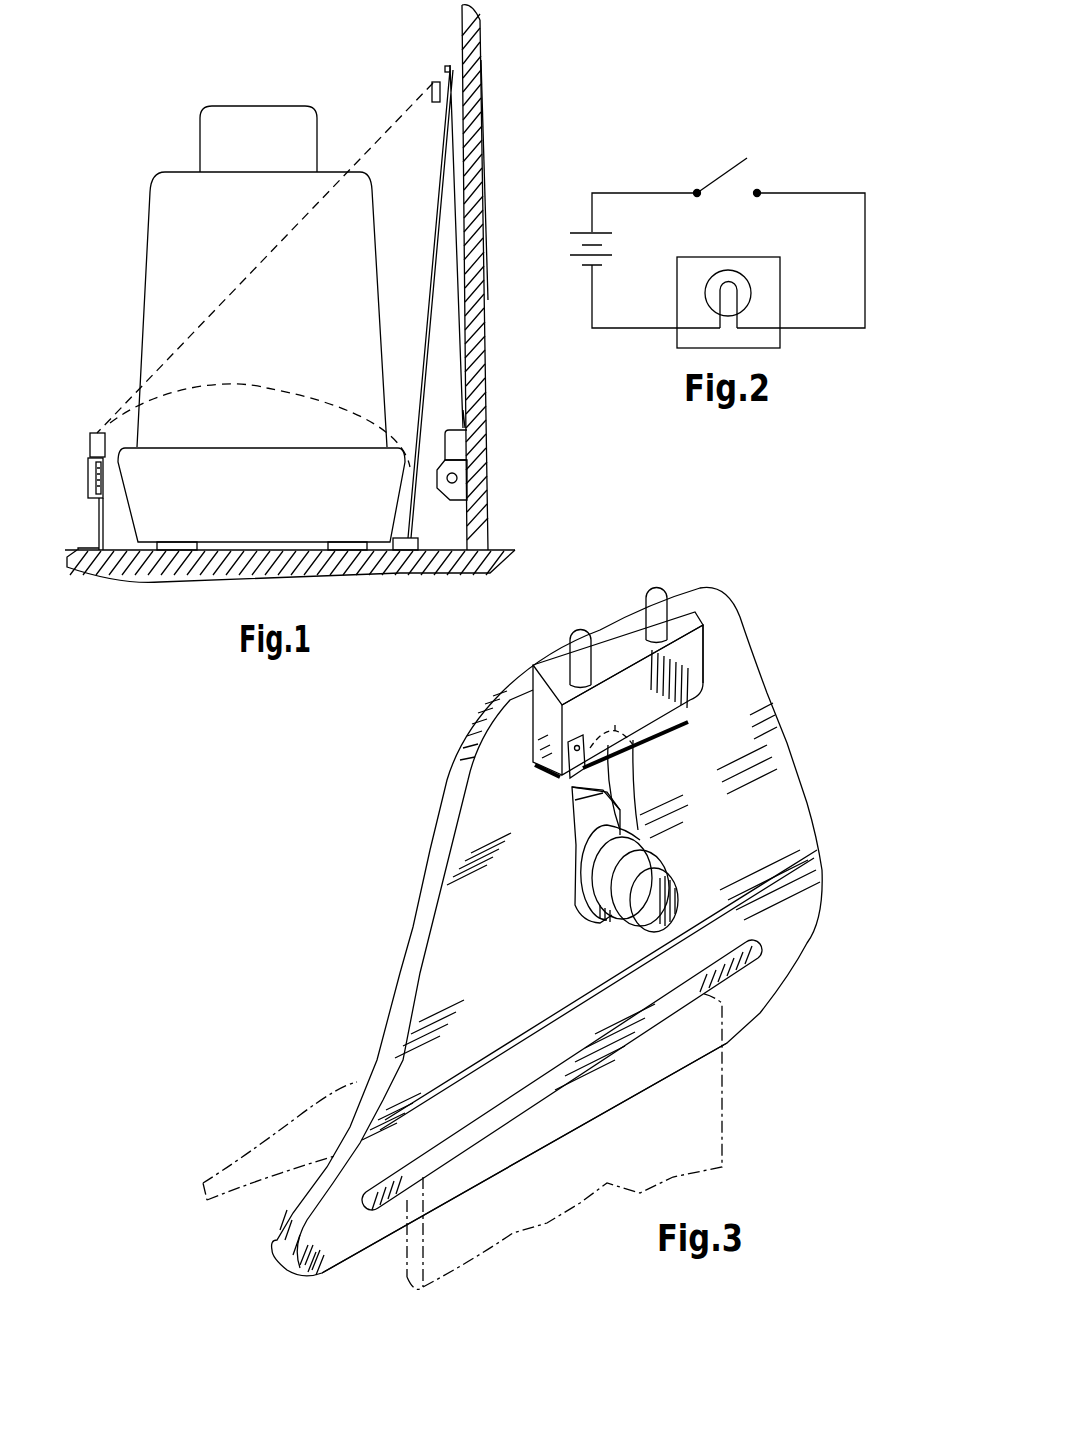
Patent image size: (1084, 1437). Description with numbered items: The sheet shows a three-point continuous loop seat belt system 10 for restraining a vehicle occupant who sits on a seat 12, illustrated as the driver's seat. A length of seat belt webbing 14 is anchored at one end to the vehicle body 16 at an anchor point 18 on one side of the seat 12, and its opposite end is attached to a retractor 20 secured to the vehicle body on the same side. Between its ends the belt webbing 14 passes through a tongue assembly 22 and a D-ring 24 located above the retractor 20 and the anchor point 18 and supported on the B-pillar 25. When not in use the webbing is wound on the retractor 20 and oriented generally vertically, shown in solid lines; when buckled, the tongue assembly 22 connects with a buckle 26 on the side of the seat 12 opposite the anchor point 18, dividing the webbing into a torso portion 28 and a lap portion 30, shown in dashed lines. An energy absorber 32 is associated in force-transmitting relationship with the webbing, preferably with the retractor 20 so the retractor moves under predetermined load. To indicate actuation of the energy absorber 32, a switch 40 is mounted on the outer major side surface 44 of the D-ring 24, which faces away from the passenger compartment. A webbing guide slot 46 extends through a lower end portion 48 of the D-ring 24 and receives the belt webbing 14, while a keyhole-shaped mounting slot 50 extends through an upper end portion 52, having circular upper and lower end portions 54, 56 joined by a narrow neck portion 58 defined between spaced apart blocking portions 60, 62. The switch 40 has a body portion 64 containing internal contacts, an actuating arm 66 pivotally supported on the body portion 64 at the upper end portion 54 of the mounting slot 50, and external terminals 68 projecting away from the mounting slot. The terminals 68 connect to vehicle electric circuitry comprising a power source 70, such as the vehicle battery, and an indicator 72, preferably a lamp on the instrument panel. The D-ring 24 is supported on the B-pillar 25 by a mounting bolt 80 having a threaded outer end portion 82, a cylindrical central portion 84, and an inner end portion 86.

In FIG. 1, the seat belt system 10 is at (152, 127).
In FIG. 3, the seat belt system 10 is at (358, 917).
In FIG. 1, the seat 12 is at (173, 187).
In FIG. 1, the seat belt webbing 14 is at (424, 282).
In FIG. 3, the seat belt webbing 14 is at (257, 1150).
In FIG. 1, the vehicle body 16 is at (505, 567).
In FIG. 1, the anchor point 18 is at (405, 537).
In FIG. 1, the retractor 20 is at (472, 481).
In FIG. 1, the tongue assembly 22 is at (432, 82).
In FIG. 1, the D-ring 24 is at (457, 43).
In FIG. 3, the D-ring 24 is at (388, 978).
In FIG. 1, the B-pillar 25 is at (475, 250).
In FIG. 1, the buckle 26 is at (90, 498).
In FIG. 1, the torso portion 28 is at (217, 307).
In FIG. 1, the lap portion 30 is at (240, 387).
In FIG. 1, the energy absorber 32 is at (463, 445).
In FIG. 2, the switch 40 is at (723, 148).
In FIG. 3, the switch 40 is at (716, 618).
In FIG. 3, the outer major side surface 44 is at (770, 805).
In FIG. 3, the webbing guide slot 46 is at (637, 1040).
In FIG. 3, the lower end portion 48 is at (590, 1113).
In FIG. 3, the mounting slot 50 is at (560, 802).
In FIG. 3, the upper end portion 52 is at (780, 722).
In FIG. 3, the upper end portion of the mounting slot 54 is at (630, 758).
In FIG. 3, the lower end portion of the mounting slot 56 is at (573, 905).
In FIG. 3, the neck portion 58 is at (640, 800).
In FIG. 3, the blocking portion 60 is at (573, 827).
In FIG. 3, the blocking portion 62 is at (640, 810).
In FIG. 3, the body portion 64 is at (550, 715).
In FIG. 3, the actuating arm 66 is at (693, 710).
In FIG. 2, the external terminals 68 is at (697, 190).
In FIG. 3, the external terminals 68 is at (578, 630).
In FIG. 2, the power source 70 is at (598, 262).
In FIG. 2, the indicator 72 is at (733, 257).
In FIG. 3, the mounting bolt 80 is at (625, 935).
In FIG. 3, the threaded outer end portion 82 is at (673, 883).
In FIG. 3, the cylindrical central portion 84 is at (653, 852).
In FIG. 3, the inner end portion 86 is at (570, 780).